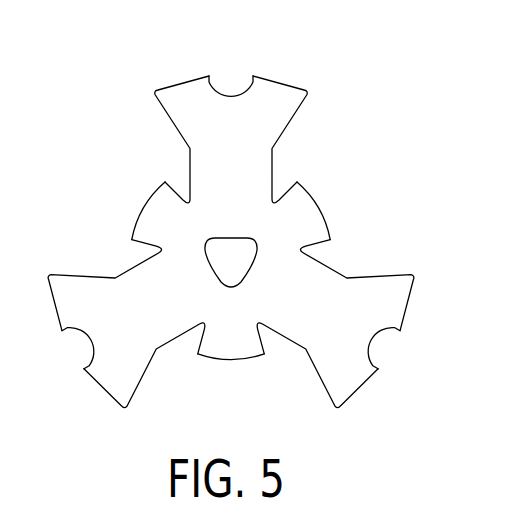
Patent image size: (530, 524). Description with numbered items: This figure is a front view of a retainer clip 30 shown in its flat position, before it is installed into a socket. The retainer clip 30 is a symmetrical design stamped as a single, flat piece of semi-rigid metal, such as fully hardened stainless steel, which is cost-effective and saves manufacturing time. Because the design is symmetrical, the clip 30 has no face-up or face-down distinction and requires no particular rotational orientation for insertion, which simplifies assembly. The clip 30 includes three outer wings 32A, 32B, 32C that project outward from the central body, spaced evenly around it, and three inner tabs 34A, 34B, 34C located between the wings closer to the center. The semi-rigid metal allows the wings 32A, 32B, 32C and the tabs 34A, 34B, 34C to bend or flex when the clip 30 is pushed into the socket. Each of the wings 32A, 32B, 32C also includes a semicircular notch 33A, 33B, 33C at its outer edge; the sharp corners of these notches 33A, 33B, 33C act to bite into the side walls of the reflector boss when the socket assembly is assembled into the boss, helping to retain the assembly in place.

The retainer clip 30 is at (328, 35).
The outer wing 32A is at (293, 92).
The outer wing 32B is at (401, 302).
The outer wing 32C is at (107, 379).
The semicircular notch 33A is at (239, 93).
The semicircular notch 33B is at (374, 341).
The semicircular notch 33C is at (84, 334).
The inner tab 34A is at (314, 213).
The inner tab 34B is at (234, 356).
The inner tab 34C is at (148, 211).